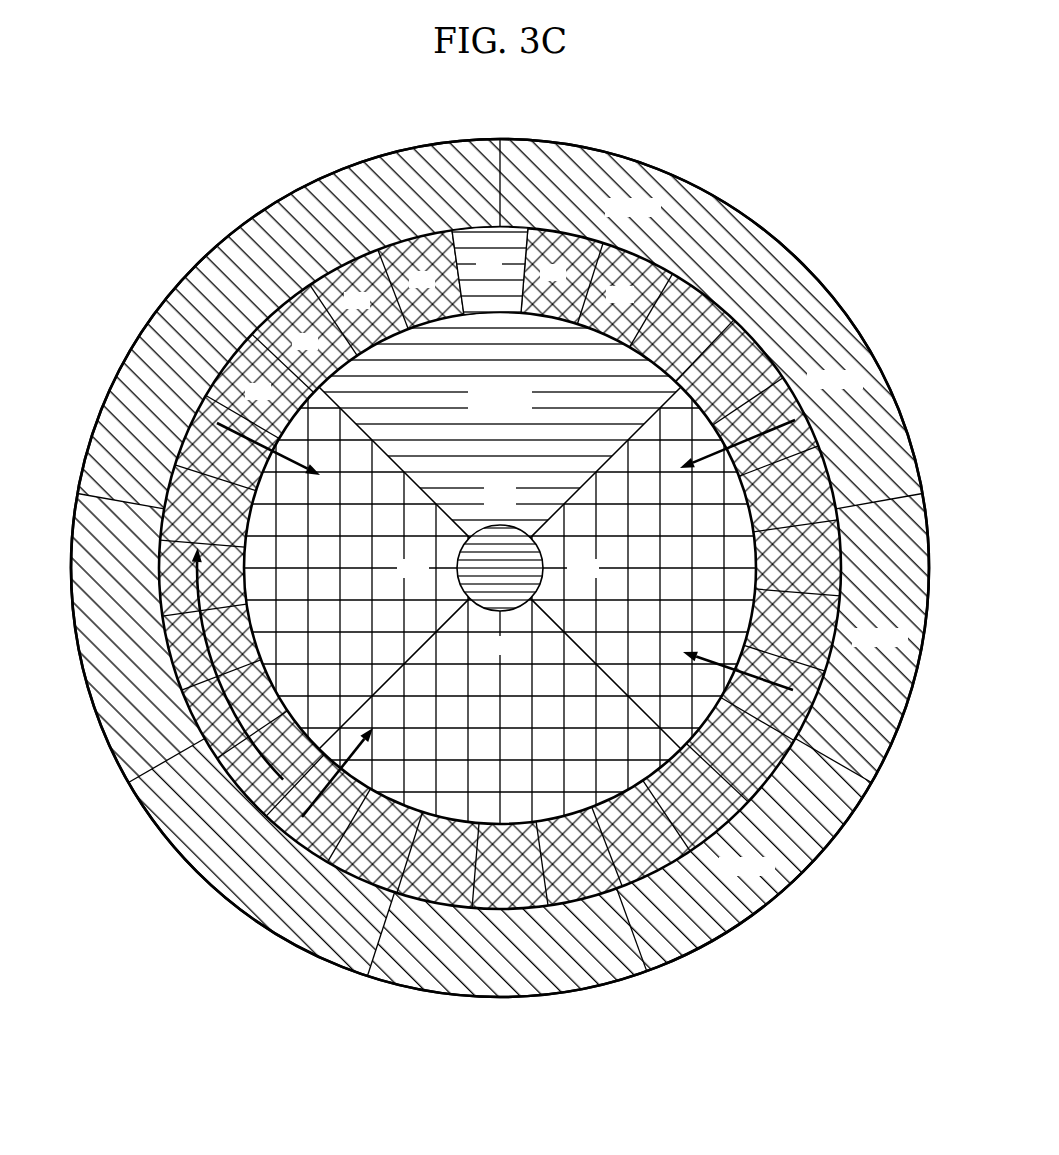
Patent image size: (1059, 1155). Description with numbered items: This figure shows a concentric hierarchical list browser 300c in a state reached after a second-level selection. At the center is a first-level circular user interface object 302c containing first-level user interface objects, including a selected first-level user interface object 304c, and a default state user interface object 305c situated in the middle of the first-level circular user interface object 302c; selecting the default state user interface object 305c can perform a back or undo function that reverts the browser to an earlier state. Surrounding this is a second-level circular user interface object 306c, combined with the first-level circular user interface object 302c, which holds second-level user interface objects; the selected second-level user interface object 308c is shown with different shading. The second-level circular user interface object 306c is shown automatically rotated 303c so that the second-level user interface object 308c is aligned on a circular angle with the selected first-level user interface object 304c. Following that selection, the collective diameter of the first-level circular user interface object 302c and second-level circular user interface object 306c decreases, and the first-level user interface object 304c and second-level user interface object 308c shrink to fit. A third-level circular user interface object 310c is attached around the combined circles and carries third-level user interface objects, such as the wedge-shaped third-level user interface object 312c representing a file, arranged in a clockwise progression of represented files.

The storage system disk structure 300c is at (364, 102).
The first-level circular user interface object 302c is at (662, 345).
The automatic rotation 303c is at (262, 779).
The first-level user interface object 304c is at (472, 413).
The default state user interface object 305c is at (525, 618).
The second-level circular user interface object 306c is at (146, 577).
The second-level user interface object 308c is at (512, 240).
The third-level circular user interface object 310c is at (255, 199).
The third-level user interface object 312c is at (672, 180).